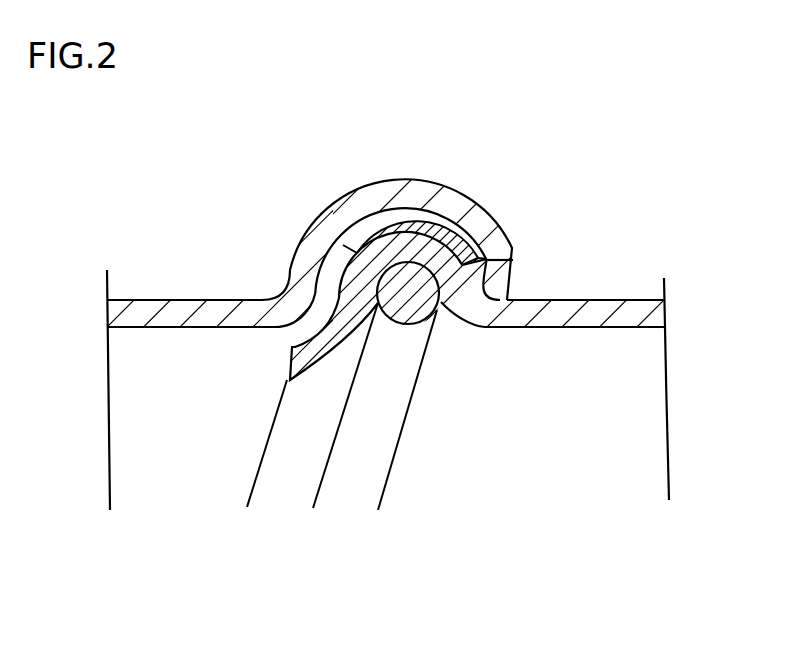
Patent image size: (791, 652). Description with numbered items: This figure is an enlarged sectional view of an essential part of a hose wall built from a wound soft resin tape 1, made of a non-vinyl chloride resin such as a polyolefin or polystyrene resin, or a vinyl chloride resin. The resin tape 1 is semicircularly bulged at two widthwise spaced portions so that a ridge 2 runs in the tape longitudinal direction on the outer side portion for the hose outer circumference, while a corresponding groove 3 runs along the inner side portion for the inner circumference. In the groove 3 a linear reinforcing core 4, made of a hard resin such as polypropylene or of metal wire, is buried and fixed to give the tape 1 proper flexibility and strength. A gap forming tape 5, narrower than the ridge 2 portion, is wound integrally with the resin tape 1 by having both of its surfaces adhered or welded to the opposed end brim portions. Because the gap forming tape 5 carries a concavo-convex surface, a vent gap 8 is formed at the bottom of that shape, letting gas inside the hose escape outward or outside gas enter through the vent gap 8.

The soft resin tape 1 is at (193, 298).
The ridge 2 is at (488, 259).
The groove 3 is at (429, 290).
The reinforcing core 4 is at (405, 307).
The gap forming tape 5 is at (442, 208).
The vent gap 8 is at (360, 232).